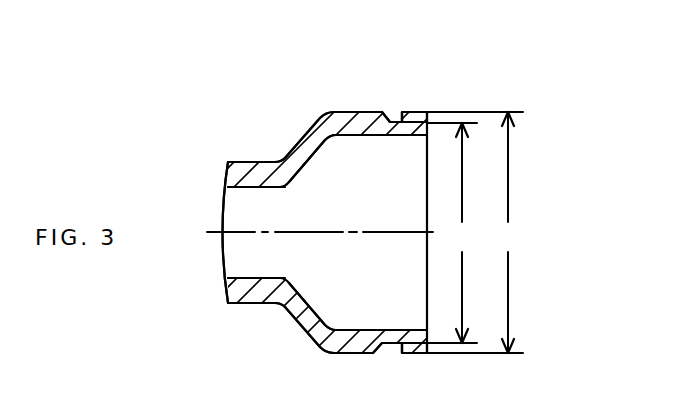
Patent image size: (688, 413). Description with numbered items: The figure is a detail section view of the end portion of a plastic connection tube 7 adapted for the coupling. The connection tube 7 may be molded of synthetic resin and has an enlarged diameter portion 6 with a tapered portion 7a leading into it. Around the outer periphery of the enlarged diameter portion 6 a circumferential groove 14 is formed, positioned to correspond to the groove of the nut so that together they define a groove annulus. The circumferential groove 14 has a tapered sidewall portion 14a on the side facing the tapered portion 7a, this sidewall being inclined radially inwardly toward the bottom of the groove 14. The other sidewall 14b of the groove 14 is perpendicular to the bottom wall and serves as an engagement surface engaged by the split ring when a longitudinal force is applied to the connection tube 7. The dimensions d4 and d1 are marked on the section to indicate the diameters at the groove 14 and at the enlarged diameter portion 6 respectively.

The connection tube 7 is at (472, 82).
The tapered portion 7a is at (306, 142).
The enlarged diameter portion 6 is at (352, 122).
The circumferential groove 14 is at (401, 101).
The tapered sidewall portion 14a is at (392, 114).
The sidewall 14b is at (399, 347).
The inner diameter d4 is at (452, 233).
The outer diameter d1 is at (477, 232).